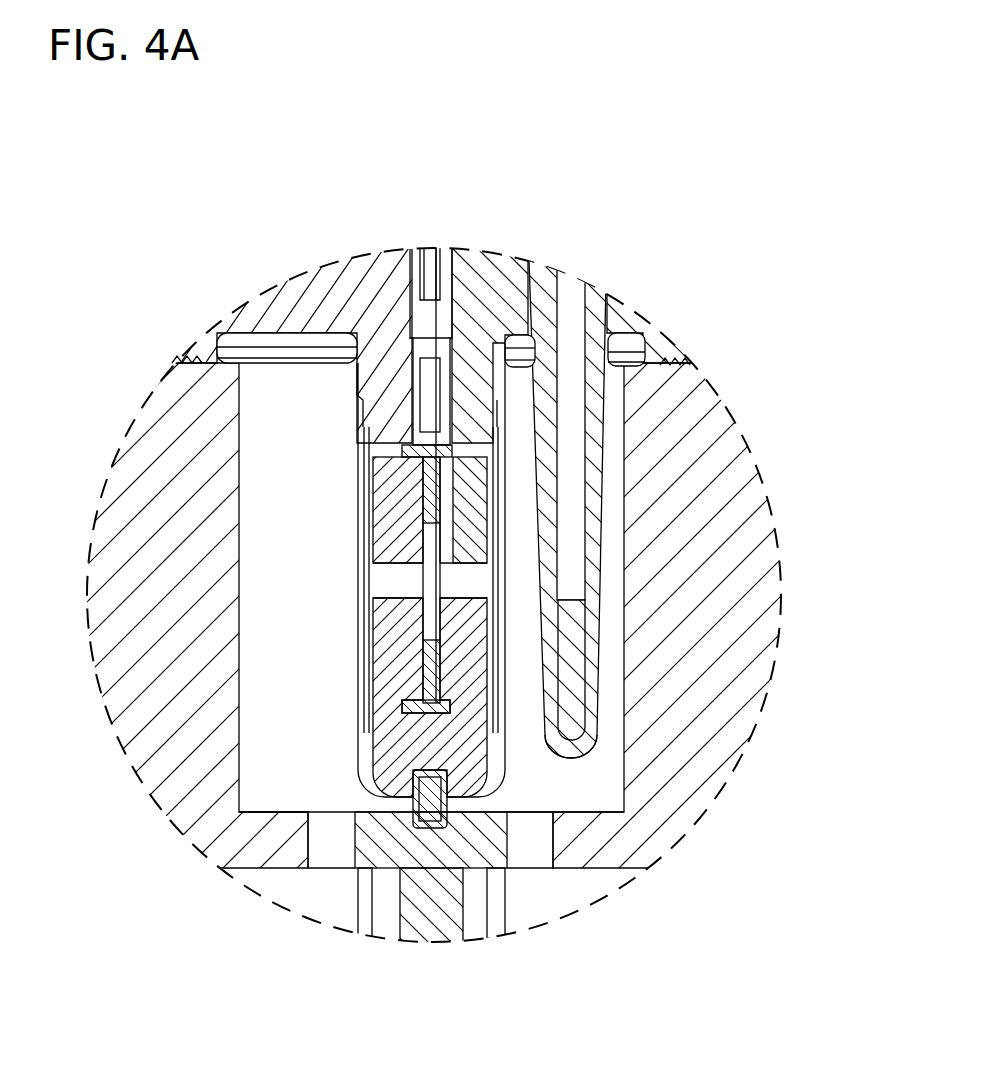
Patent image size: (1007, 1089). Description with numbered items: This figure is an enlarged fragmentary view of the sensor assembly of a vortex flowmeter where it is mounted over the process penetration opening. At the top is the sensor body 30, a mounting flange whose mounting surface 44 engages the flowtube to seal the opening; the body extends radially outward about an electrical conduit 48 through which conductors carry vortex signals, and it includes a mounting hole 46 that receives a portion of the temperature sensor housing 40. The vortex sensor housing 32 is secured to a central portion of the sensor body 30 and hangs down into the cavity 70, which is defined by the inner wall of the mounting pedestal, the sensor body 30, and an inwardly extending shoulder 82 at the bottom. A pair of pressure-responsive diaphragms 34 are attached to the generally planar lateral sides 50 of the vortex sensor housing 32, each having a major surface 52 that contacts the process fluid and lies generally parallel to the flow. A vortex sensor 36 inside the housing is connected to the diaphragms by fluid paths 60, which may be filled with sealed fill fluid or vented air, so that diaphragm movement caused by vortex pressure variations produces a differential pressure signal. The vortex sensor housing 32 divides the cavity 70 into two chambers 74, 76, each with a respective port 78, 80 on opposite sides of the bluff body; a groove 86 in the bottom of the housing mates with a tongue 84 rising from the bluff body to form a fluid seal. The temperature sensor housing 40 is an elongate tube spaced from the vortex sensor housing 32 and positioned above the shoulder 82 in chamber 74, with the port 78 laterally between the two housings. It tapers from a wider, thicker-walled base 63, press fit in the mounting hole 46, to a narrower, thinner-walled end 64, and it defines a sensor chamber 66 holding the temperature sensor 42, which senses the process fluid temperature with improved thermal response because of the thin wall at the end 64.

The sensor body 30 is at (284, 304).
The vortex sensor housing 32 is at (371, 779).
The pressure-responsive diaphragms 34 is at (360, 507).
The vortex sensor 36 is at (385, 565).
The temperature sensor housing 40 is at (600, 528).
The temperature sensor 42 is at (560, 697).
The mounting surface 44 is at (203, 371).
The mounting hole 46 is at (616, 318).
The electrical conduit 48 is at (412, 303).
The lateral sides 50 is at (357, 397).
The major surface 52 is at (357, 577).
The fluid paths 60 is at (385, 625).
The base 63 is at (545, 286).
The end 64 is at (572, 752).
The sensor chamber 66 is at (575, 672).
The cavity 70 is at (239, 758).
The chamber 74 is at (517, 801).
The chamber 76 is at (272, 787).
The port 78 is at (530, 845).
The port 80 is at (325, 864).
The inwardly extending shoulder 82 is at (583, 815).
The tongue 84 is at (463, 803).
The groove 86 is at (413, 790).